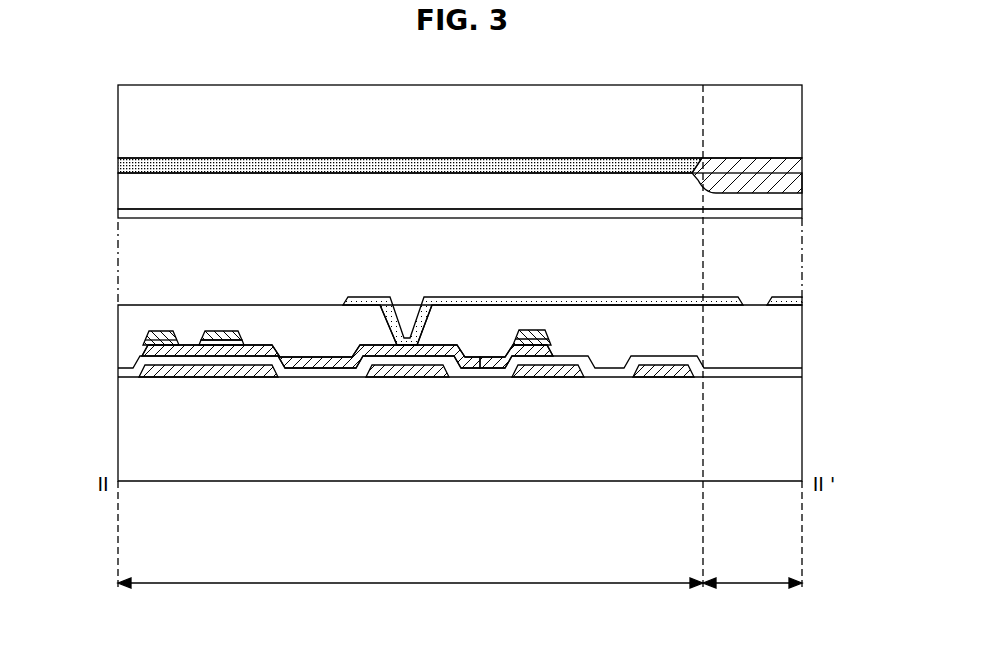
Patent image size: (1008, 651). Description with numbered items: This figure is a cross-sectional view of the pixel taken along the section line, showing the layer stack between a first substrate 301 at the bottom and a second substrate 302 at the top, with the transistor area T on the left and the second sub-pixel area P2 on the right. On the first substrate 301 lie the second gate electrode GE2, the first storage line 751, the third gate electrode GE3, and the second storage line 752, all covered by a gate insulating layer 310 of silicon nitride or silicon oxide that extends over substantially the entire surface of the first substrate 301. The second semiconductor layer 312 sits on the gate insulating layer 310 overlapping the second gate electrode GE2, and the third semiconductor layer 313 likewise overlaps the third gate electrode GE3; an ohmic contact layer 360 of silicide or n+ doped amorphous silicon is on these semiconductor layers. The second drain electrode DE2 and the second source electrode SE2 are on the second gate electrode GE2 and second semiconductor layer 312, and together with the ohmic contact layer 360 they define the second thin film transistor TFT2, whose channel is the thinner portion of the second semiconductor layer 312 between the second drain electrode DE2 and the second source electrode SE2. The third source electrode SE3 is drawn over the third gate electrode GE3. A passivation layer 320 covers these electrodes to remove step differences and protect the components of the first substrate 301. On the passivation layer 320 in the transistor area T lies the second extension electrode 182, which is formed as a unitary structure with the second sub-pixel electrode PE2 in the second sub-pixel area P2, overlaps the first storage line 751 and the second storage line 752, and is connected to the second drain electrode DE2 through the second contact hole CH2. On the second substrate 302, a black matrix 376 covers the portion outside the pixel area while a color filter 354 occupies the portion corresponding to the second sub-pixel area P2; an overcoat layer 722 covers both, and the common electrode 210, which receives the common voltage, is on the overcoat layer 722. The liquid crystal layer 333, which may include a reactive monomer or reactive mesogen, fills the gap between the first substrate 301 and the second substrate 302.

The second substrate 302 is at (790, 121).
The black matrix 376 is at (135, 165).
The color filter 354 is at (790, 175).
The overcoat layer 722 is at (135, 195).
The common electrode 210 is at (714, 213).
The liquid crystal layer 333 is at (790, 253).
The first substrate 301 is at (790, 424).
The passivation layer 320 is at (790, 334).
The gate insulating layer 310 is at (790, 371).
The second gate electrode GE2 is at (172, 372).
The second semiconductor layer 312 is at (185, 352).
The second source electrode SE2 is at (160, 338).
The second drain electrode DE2 is at (223, 333).
The ohmic contact layer 360 is at (217, 343).
The second thin film transistor TFT2 is at (303, 442).
The first storage line 751 is at (412, 370).
The third gate electrode GE3 is at (537, 372).
The third semiconductor layer 313 is at (547, 349).
The third source electrode SE3 is at (530, 336).
The second storage line 752 is at (665, 370).
The second extension electrode 182 is at (358, 300).
The second contact hole CH2 is at (414, 306).
The second sub-pixel electrode PE2 is at (727, 297).
The transistor area T is at (410, 595).
The second sub-pixel area P2 is at (752, 593).